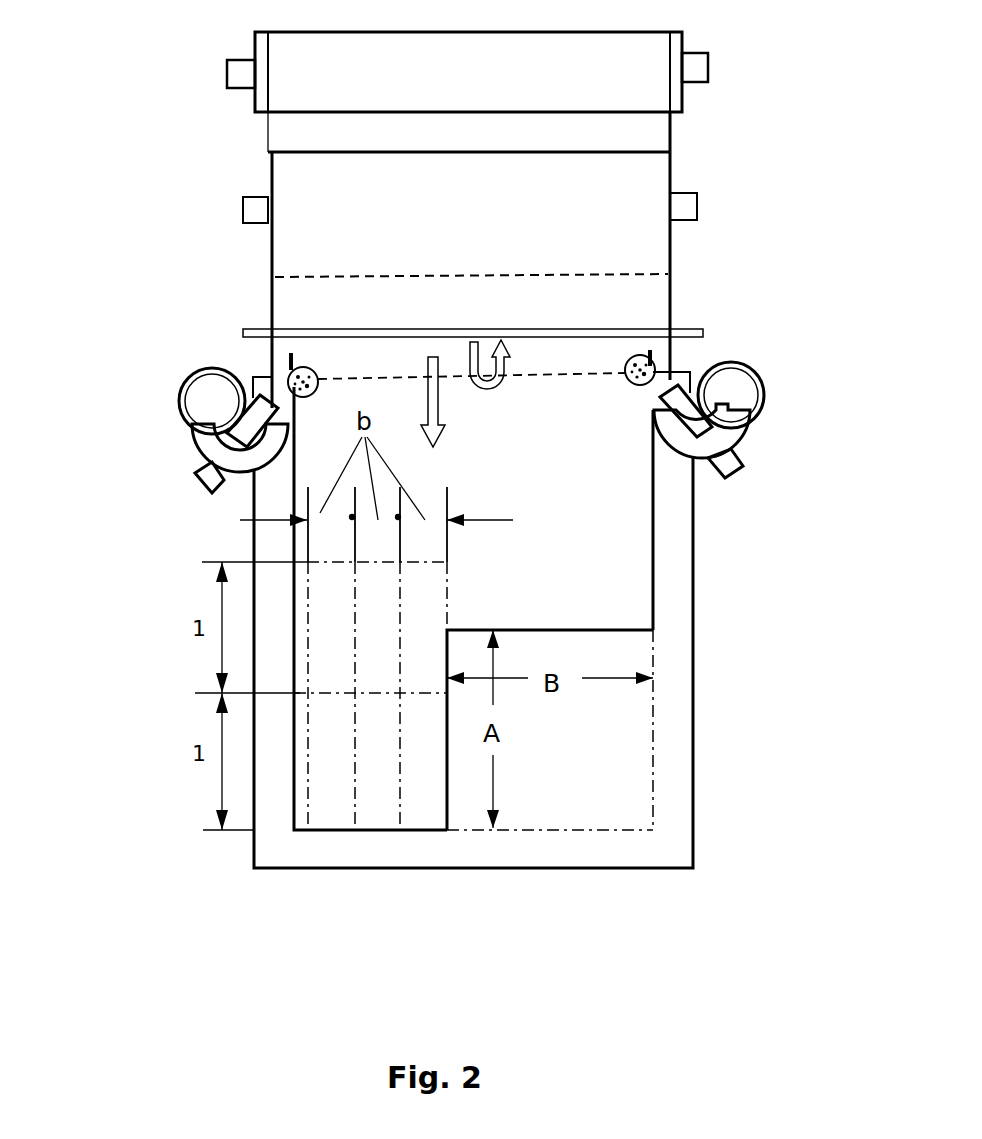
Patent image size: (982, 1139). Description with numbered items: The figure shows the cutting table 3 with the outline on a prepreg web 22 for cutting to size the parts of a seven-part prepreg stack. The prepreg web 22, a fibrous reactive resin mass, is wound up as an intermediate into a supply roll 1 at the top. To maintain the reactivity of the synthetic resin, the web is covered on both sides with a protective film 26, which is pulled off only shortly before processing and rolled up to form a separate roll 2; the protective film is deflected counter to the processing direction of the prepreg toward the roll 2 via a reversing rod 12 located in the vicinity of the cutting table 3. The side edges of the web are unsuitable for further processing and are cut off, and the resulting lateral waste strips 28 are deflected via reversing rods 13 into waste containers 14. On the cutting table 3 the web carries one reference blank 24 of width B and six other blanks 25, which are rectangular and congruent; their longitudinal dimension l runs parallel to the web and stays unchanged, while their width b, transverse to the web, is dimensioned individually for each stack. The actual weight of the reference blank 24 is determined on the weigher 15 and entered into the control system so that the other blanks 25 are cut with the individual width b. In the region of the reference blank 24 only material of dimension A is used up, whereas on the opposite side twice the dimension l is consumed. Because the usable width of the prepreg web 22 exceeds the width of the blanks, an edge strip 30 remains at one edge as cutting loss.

The supply roll 1 is at (642, 253).
The roll 2 is at (648, 88).
The cutting table 3 is at (673, 602).
The reversing rod 12 is at (703, 331).
The reversing rods 13 is at (207, 478).
The waste containers 14 is at (208, 397).
The weigher 15 is at (289, 378).
The prepreg web 22 is at (547, 459).
The reference blank 24 is at (607, 757).
The other blanks 25 is at (427, 788).
The protective film 26 is at (296, 133).
The lateral waste strips 28 is at (213, 450).
The edge strip 30 is at (300, 628).